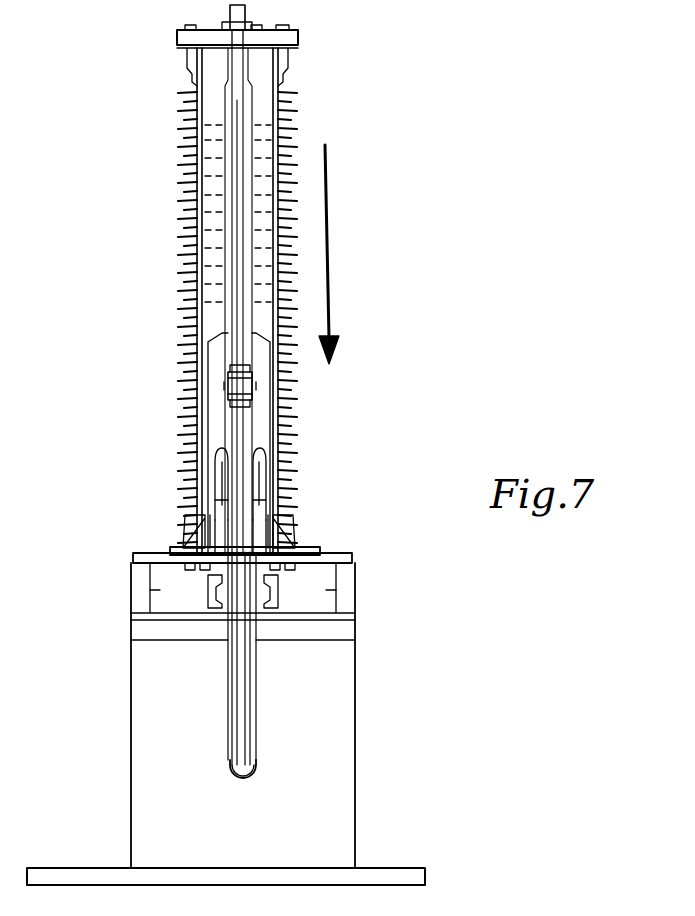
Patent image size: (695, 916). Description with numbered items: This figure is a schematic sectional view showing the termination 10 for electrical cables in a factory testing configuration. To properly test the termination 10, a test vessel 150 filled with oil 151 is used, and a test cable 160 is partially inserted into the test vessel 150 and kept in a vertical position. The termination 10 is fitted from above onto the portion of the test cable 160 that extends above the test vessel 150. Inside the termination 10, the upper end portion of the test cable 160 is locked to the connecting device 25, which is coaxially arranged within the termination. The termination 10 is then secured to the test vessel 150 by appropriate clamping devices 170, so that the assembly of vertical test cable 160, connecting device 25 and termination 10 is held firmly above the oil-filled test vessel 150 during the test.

The termination 10 is at (160, 213).
The connecting device 25 is at (230, 384).
The test cable 160 is at (228, 420).
The clamping devices 170 is at (295, 589).
The test vessel 150 is at (357, 704).
The oil 151 is at (285, 758).